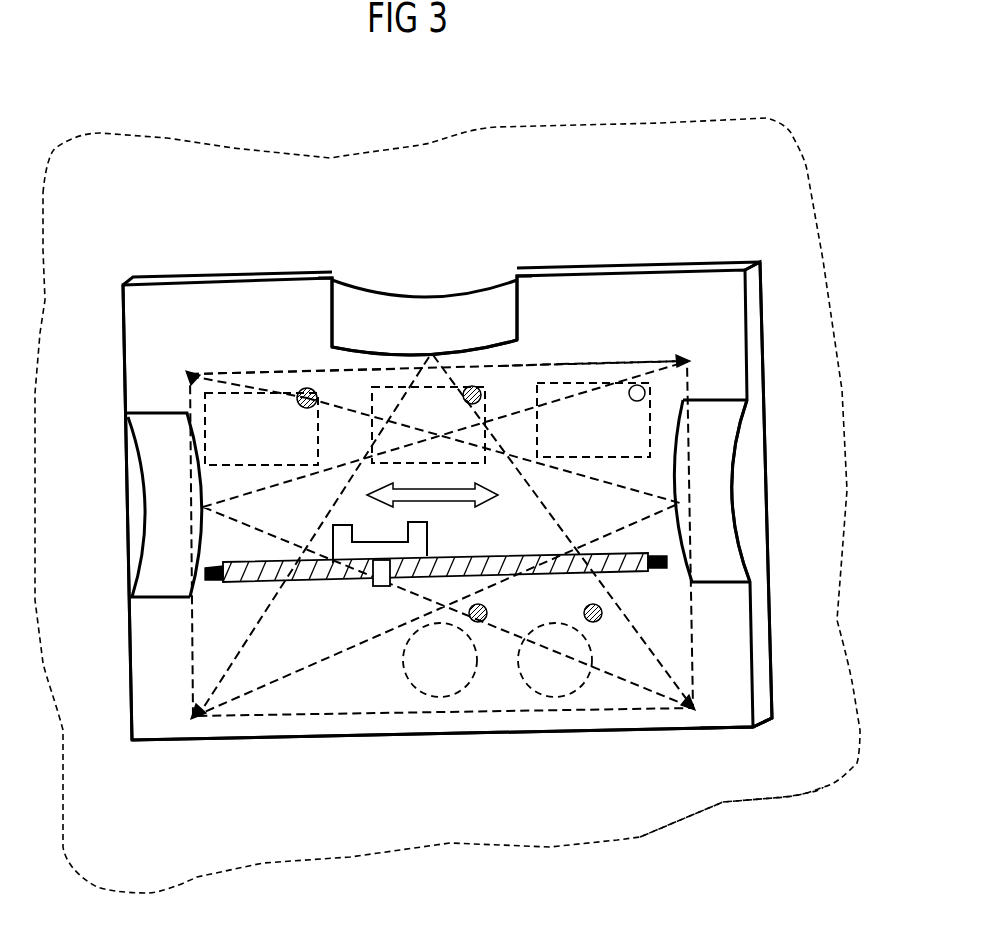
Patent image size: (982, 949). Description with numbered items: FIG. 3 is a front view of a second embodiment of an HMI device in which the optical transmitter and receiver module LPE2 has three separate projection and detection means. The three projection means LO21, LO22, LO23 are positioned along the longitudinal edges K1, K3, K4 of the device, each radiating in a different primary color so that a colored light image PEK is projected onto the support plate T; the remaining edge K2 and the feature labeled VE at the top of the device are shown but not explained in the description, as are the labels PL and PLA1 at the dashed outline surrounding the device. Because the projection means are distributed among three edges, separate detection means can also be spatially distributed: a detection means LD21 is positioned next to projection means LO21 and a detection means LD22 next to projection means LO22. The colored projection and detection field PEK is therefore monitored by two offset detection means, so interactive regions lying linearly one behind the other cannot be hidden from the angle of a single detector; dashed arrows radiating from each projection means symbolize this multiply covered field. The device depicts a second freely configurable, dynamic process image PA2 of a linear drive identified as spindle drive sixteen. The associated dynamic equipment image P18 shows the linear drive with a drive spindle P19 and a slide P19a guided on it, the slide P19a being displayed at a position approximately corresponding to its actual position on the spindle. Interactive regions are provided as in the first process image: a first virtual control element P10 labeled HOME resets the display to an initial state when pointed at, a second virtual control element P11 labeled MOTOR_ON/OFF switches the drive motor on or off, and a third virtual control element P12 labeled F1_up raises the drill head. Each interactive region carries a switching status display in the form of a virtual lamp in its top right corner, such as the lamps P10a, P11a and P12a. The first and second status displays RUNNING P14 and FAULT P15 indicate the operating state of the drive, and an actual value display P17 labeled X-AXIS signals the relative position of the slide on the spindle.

The longitudinal edge K1 is at (722, 266).
The housing bottom edge K2 is at (598, 722).
The longitudinal edge K3 is at (753, 288).
The longitudinal edge K4 is at (128, 318).
The recess VE is at (372, 275).
The optical transmitter and receiver module LPE2 is at (425, 278).
The projection means LO21 is at (420, 355).
The detection means LD21 is at (522, 373).
The colored light image / projection and detection field PEK is at (590, 367).
The second dynamic process image PA2 is at (598, 363).
The first interactive region / virtual control element P10 is at (218, 418).
The Home marker P10a is at (380, 364).
The second virtual control element P11 is at (380, 392).
The switching status display P11a is at (465, 388).
The third virtual control element P12 is at (618, 392).
The switching status display P12a is at (633, 416).
The projection means LO22 is at (200, 498).
The detection means LD22 is at (140, 575).
The projection means LO23 is at (676, 487).
The actual value display P17 is at (487, 512).
The dynamic equipment image P18 is at (225, 580).
The drive spindle P19 is at (333, 557).
The slide P19a is at (387, 556).
The first status display P14 is at (440, 677).
The second status display P15 is at (555, 673).
The support plate T is at (717, 705).
The planning area boundary PL is at (620, 807).
The planning area section PLA1 is at (657, 730).